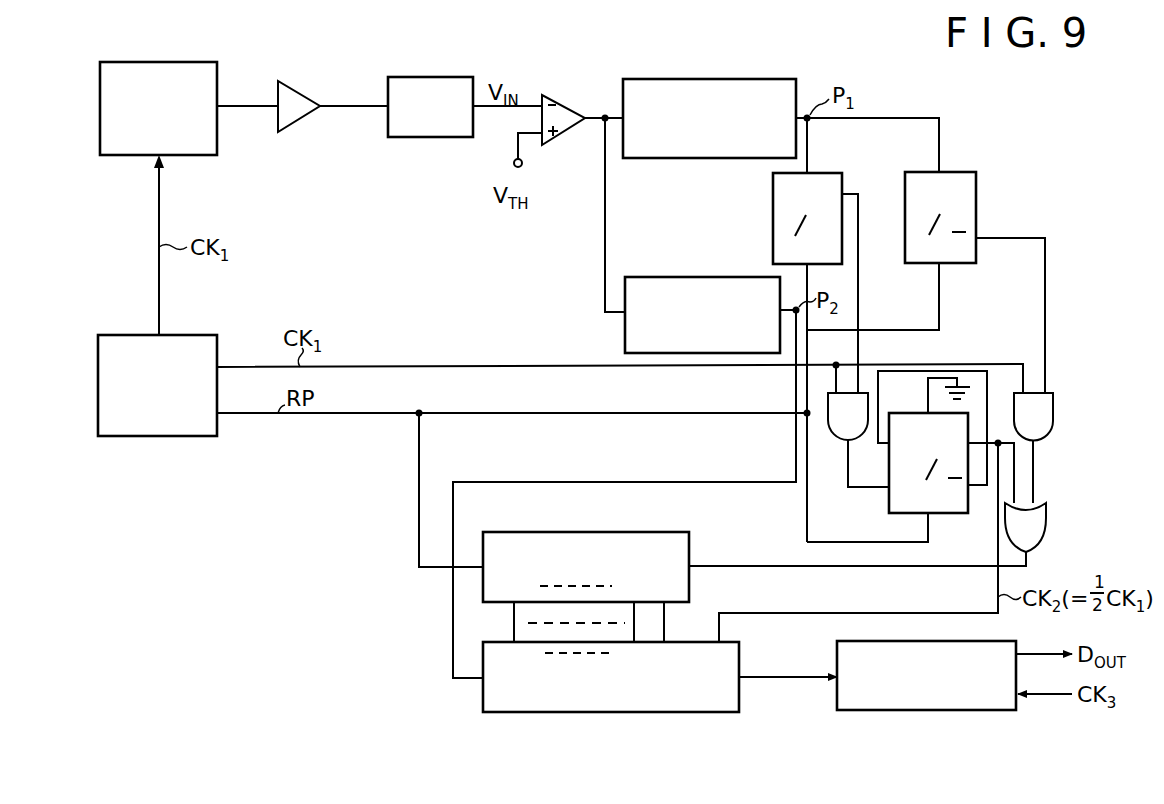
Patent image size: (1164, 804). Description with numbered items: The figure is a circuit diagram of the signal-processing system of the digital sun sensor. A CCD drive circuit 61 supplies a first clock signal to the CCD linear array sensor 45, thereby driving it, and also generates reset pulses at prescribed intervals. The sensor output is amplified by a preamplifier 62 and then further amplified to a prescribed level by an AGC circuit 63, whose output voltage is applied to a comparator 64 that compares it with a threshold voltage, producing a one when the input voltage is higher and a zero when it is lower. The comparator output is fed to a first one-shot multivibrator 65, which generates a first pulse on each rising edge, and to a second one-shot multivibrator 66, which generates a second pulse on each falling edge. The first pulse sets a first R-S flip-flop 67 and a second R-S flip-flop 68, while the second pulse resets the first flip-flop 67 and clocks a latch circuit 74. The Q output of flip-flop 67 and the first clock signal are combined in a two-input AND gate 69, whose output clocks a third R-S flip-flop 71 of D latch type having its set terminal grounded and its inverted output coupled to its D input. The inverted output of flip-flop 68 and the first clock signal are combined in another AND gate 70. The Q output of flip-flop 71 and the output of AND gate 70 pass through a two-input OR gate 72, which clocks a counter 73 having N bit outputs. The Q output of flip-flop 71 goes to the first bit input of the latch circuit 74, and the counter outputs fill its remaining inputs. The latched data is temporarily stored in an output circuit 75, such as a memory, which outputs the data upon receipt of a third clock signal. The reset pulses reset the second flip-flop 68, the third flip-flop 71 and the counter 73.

The CCD linear array sensor 45 is at (160, 62).
The CCD drive circuit 61 is at (203, 335).
The preamplifier 62 is at (298, 92).
The AGC circuit 63 is at (433, 77).
The comparator 64 is at (567, 96).
The first one-shot multivibrator 65 is at (738, 79).
The second one-shot multivibrator 66 is at (692, 277).
The first R-S flip-flop 67 is at (838, 173).
The second R-S flip-flop 68 is at (965, 172).
The 2-input AND gate 69 is at (846, 443).
The 2-input AND gate 70 is at (1053, 406).
The third R-S flip-flop 71 is at (889, 509).
The 2-input OR gate 72 is at (1046, 524).
The counter 73 is at (689, 539).
The latch circuit 74 is at (739, 651).
The output circuit 75 is at (935, 710).